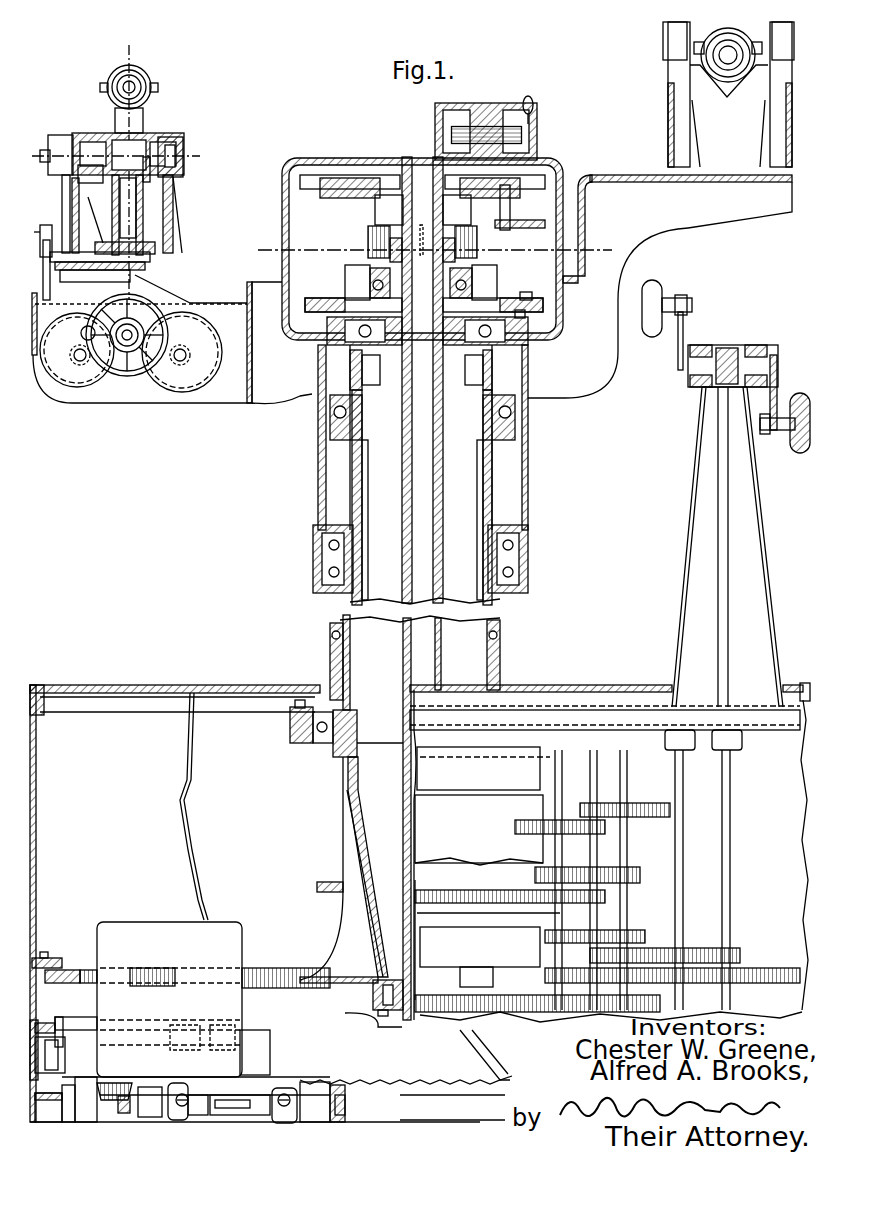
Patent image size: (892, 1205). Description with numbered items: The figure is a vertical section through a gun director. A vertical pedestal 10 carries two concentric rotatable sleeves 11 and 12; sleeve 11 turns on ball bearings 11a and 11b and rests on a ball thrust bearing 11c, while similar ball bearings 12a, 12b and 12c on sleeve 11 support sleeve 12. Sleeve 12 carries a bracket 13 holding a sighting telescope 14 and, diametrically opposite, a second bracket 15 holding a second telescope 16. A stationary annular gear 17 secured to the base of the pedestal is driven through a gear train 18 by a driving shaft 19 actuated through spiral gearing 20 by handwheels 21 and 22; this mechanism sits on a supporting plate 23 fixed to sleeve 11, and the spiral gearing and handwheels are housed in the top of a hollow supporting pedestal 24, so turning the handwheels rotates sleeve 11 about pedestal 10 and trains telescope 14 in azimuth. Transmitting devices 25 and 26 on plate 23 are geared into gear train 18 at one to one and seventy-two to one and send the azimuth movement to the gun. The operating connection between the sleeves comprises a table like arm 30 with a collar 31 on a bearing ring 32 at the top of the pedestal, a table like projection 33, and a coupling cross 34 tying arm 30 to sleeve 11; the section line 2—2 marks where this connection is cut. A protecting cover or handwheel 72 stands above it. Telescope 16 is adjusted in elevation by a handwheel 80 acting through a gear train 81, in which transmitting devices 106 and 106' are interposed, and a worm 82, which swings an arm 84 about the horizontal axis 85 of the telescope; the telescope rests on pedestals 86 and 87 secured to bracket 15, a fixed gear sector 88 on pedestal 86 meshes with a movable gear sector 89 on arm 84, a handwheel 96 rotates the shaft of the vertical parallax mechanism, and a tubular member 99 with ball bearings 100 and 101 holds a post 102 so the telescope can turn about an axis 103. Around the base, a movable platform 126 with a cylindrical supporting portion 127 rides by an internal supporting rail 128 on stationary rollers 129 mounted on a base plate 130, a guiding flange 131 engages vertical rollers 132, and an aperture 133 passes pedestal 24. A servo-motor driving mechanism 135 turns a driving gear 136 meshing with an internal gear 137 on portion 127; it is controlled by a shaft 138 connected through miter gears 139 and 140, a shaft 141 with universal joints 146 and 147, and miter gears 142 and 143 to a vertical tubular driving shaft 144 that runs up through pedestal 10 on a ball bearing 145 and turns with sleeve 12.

The vertical pedestal 10 is at (482, 483).
The rotatable sleeve 11 is at (493, 450).
The ball bearing 11a is at (362, 372).
The ball bearing 11b is at (305, 745).
The ball thrust bearing 11c is at (375, 443).
The rotatable sleeve 12 is at (528, 420).
The ball bearing 12a is at (330, 355).
The ball bearing 12b is at (322, 575).
The ball bearing 12c is at (315, 528).
The bracket 13 is at (680, 236).
The sighting telescope 14 is at (728, 68).
The second bracket 15 is at (262, 404).
The second telescope 16 is at (146, 74).
The stationary annular gear 17 is at (315, 887).
The gear train 18 is at (632, 867).
The driving shaft 19 is at (730, 808).
The spiral gearing 20 is at (730, 345).
The handwheel 21 is at (648, 337).
The handwheel 22 is at (800, 393).
The supporting plate 23 is at (770, 730).
The hollow supporting pedestal 24 is at (690, 512).
The transmitting device 25 is at (455, 955).
The transmitting device 26 is at (580, 960).
The table like arm 30 is at (335, 300).
The collar 31 is at (480, 288).
The bearing ring 32 is at (460, 268).
The table like projection 33 is at (505, 300).
The coupling cross 34 is at (520, 318).
The protecting cover or handwheel 72 is at (437, 122).
The handwheel 80 is at (128, 372).
The gear train 81 is at (92, 386).
The worm 82 is at (130, 296).
The arm 84 is at (113, 222).
The horizontal axis 85 is at (38, 156).
The pedestal 86 is at (58, 135).
The pedestal 87 is at (174, 250).
The fixed gear sector 88 is at (66, 192).
The movable gear sector 89 is at (72, 212).
The handwheel 96 is at (46, 226).
The member carrying the telescope 99 is at (172, 137).
The ball bearing 100 is at (113, 133).
The ball bearing 101 is at (150, 257).
The post 102 is at (135, 225).
The axis 103 is at (126, 52).
The transmitting device 106 is at (80, 368).
The transmitting device 106' is at (183, 369).
The movable platform 126 is at (118, 685).
The cylindrical vertical supporting portion 127 is at (38, 795).
The circular internal supporting rail 128 is at (48, 1023).
The stationary rollers 129 is at (50, 1055).
The base plate 130 is at (50, 1122).
The vertical guiding flange 131 is at (60, 1018).
The vertical rollers 132 is at (95, 1025).
The aperture 133 is at (665, 684).
The servo-motor driving mechanism 135 is at (222, 933).
The driving gear 136 is at (158, 972).
The internal gear 137 is at (90, 968).
The shaft 138 is at (115, 1085).
The miter gear 139 is at (110, 1096).
The miter gear 140 is at (118, 1102).
The shaft 141 is at (218, 1108).
The miter gear 142 is at (340, 1122).
The miter gear 143 is at (492, 1066).
The vertical tubular driving shaft 144 is at (440, 565).
The ball bearing 145 is at (372, 1000).
The universal joint 146 is at (178, 1118).
The universal joint 147 is at (284, 1118).
The section line 2— 2 is at (265, 258).